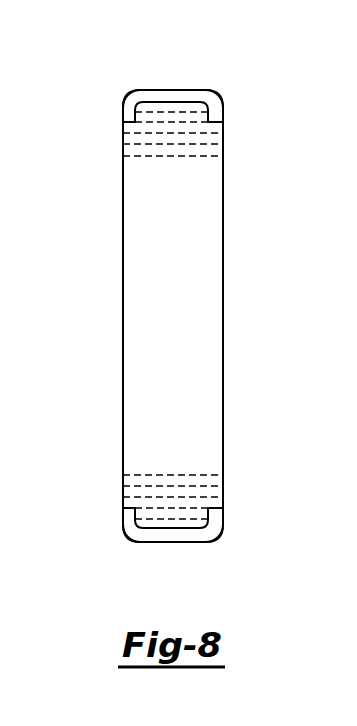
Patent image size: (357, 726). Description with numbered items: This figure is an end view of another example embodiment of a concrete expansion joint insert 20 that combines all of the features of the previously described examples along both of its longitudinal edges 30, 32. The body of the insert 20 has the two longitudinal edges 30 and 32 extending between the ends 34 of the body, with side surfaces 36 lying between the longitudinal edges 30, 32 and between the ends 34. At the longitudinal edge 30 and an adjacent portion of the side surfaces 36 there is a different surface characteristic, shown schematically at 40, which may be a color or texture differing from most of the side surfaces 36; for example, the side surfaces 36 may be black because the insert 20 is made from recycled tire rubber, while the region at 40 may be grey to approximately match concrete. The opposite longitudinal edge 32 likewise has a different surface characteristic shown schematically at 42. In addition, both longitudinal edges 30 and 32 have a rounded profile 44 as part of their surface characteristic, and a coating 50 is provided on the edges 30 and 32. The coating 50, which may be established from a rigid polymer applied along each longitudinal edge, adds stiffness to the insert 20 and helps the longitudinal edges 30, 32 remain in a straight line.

The concrete expansion joint insert 20 is at (232, 158).
The longitudinal edge 30 is at (173, 90).
The longitudinal edge 32 is at (172, 542).
The ends 34 is at (163, 306).
The side surfaces 36 is at (123, 321).
The surface characteristic 40 is at (187, 133).
The surface characteristic 42 is at (187, 520).
The rounded profile 44 is at (222, 102).
The coating 50 is at (133, 100).